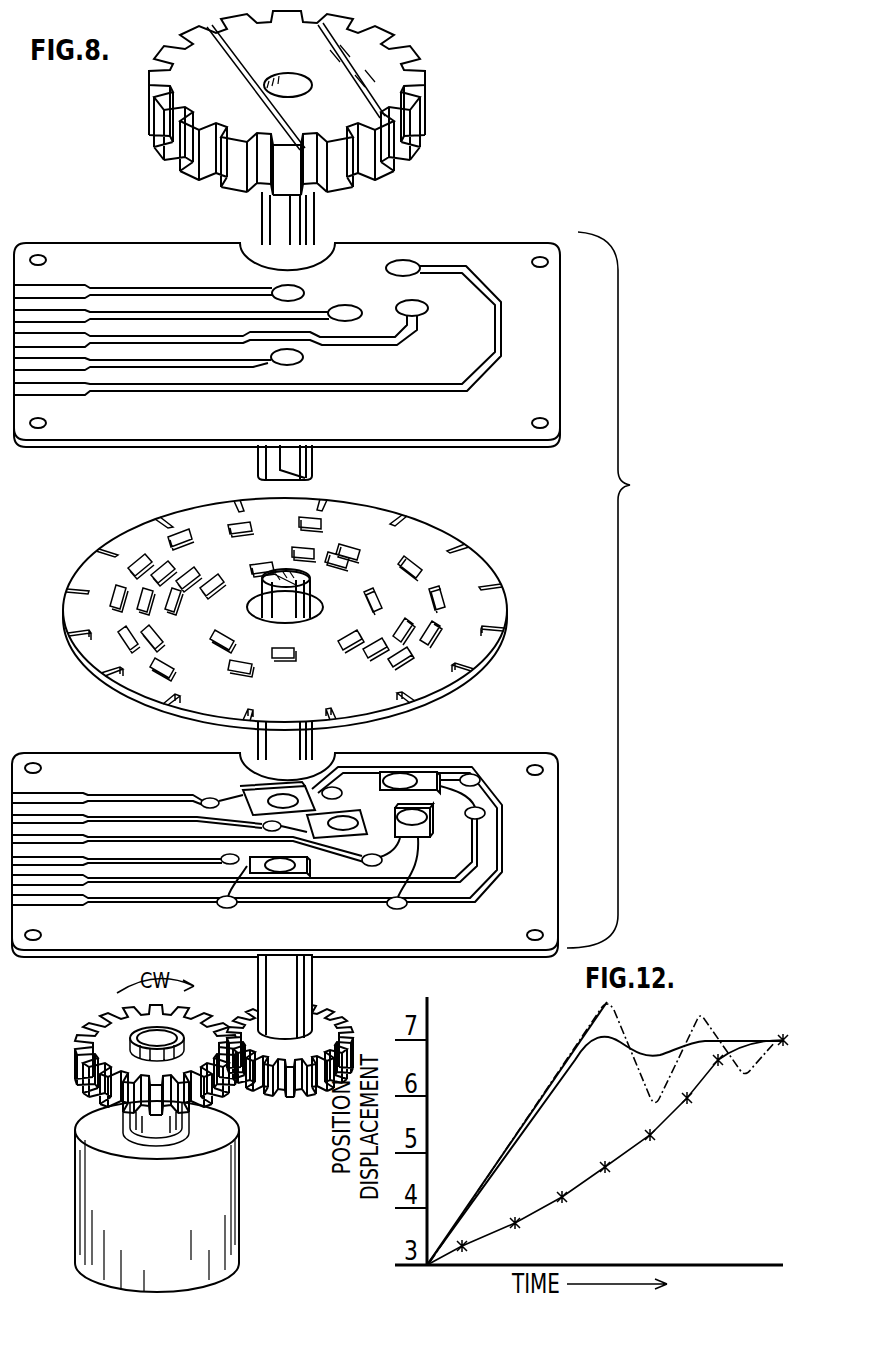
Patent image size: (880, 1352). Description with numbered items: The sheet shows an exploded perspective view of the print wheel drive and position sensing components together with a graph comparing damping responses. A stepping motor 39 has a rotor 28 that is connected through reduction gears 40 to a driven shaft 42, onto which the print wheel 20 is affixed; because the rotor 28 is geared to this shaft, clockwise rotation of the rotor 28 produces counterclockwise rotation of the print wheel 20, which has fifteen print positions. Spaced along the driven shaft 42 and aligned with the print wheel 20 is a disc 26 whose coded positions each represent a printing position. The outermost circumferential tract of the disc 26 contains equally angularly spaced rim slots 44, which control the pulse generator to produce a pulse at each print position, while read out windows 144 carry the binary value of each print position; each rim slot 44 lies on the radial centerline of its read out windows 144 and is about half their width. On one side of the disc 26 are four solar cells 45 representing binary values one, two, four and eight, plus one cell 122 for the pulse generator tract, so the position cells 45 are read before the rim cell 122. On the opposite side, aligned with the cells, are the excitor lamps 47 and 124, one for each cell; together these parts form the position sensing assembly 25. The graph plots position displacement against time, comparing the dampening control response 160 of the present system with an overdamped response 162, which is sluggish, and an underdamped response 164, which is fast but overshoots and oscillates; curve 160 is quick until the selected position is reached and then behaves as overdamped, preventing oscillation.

In FIG. 8, the print wheel 20 is at (427, 108).
In FIG. 8, the driven shaft 42 is at (312, 988).
In FIG. 8, the position sensing assembly 25 is at (632, 485).
In FIG. 8, the cell excitors or lamps 47 is at (388, 270).
In FIG. 8, the cell excitor or lamp 124 is at (301, 356).
In FIG. 8, the disc 26 is at (281, 598).
In FIG. 8, the slots 44 is at (452, 682).
In FIG. 8, the read out windows 144 is at (125, 640).
In FIG. 8, the solar cells 45 is at (395, 810).
In FIG. 8, the solar cell 122 is at (297, 874).
In FIG. 8, the rotor 28 is at (157, 1033).
In FIG. 8, the reduction gears 40 is at (277, 1107).
In FIG. 8, the stepping motor 39 is at (77, 1190).
In FIG. 12, the underdamped response 164 is at (590, 1023).
In FIG. 12, the dampening control response 160 is at (598, 1042).
In FIG. 12, the overdamped response 162 is at (657, 1130).